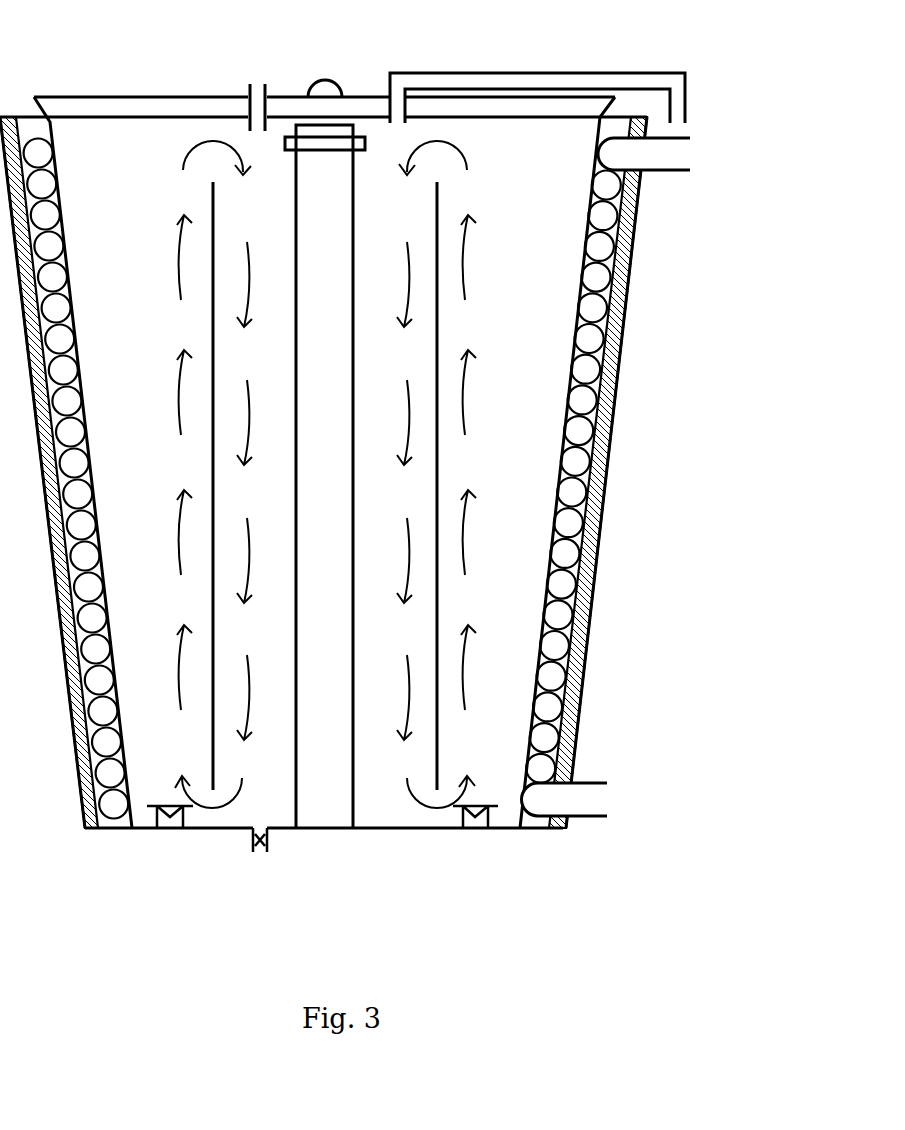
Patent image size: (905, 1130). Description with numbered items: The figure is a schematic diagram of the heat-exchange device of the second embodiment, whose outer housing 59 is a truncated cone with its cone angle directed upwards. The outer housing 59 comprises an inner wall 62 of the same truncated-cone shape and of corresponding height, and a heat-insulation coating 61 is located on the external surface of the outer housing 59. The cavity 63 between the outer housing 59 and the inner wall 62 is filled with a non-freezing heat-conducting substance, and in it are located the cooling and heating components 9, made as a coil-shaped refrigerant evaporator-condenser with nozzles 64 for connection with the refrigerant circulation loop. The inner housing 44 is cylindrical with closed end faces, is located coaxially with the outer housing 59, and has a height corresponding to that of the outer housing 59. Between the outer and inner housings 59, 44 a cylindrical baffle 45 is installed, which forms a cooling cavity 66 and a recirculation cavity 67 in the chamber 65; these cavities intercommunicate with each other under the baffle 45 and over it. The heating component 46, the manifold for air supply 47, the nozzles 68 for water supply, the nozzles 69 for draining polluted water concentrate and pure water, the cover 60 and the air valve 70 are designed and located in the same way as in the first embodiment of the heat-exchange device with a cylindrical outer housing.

The cooling and heating components 9 is at (567, 523).
The inner housing 44 is at (318, 183).
The baffle 45 is at (437, 753).
The heating component 46 is at (345, 145).
The manifold for air supply 47 is at (170, 823).
The outer housing 59 is at (575, 690).
The cover 60 is at (432, 107).
The heat-insulation coating 61 is at (590, 552).
The inner wall 62 is at (538, 645).
The cavity 63 is at (615, 128).
The nozzles 64 is at (680, 153).
The chamber 65 is at (165, 142).
The cooling cavity 66 is at (117, 230).
The recirculation cavity 67 is at (260, 240).
The nozzles for water supply 68 is at (257, 107).
The nozzles for draining 69 is at (260, 838).
The air valve 70 is at (493, 82).